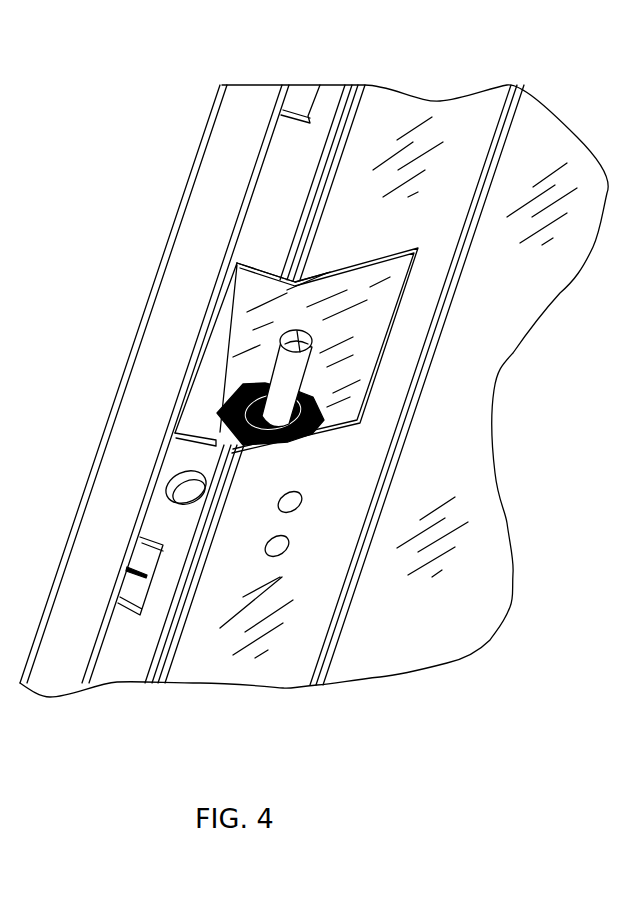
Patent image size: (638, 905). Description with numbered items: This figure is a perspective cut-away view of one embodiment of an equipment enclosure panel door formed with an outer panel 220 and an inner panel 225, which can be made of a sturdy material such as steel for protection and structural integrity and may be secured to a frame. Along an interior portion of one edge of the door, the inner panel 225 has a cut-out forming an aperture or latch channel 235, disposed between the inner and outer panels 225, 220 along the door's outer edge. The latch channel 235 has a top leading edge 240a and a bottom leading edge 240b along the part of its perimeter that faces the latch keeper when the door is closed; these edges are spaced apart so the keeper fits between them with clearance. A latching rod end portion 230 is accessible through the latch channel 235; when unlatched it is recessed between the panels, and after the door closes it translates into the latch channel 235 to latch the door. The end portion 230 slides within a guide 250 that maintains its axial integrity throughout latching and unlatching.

The outer panel 220 is at (253, 84).
The inner panel 225 is at (577, 137).
The latching rod end portion 230 is at (282, 355).
The latch channel 235 is at (393, 330).
The top leading edge 240a is at (278, 279).
The bottom leading edge 240b is at (210, 438).
The guide 250 is at (220, 406).